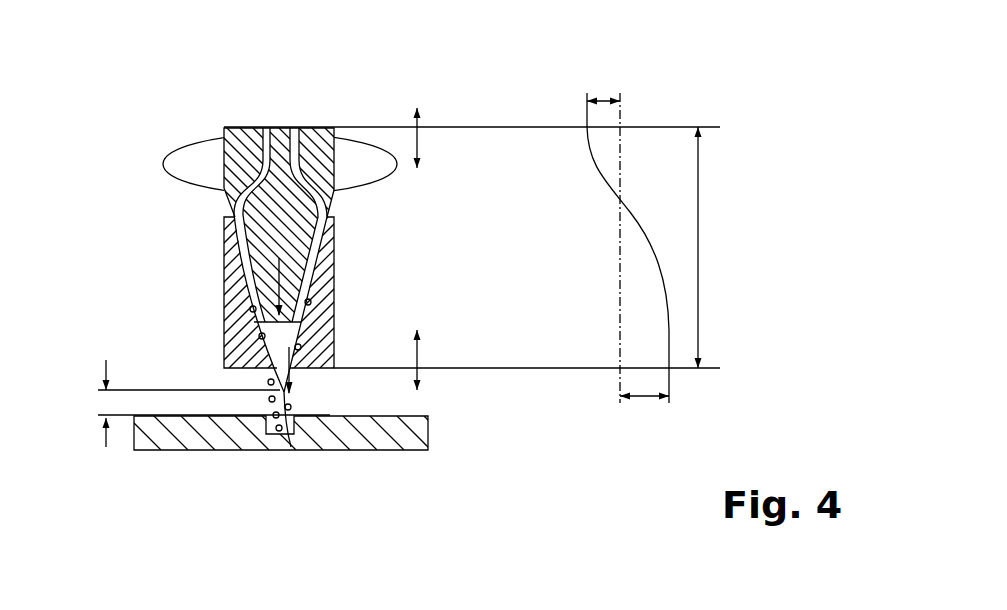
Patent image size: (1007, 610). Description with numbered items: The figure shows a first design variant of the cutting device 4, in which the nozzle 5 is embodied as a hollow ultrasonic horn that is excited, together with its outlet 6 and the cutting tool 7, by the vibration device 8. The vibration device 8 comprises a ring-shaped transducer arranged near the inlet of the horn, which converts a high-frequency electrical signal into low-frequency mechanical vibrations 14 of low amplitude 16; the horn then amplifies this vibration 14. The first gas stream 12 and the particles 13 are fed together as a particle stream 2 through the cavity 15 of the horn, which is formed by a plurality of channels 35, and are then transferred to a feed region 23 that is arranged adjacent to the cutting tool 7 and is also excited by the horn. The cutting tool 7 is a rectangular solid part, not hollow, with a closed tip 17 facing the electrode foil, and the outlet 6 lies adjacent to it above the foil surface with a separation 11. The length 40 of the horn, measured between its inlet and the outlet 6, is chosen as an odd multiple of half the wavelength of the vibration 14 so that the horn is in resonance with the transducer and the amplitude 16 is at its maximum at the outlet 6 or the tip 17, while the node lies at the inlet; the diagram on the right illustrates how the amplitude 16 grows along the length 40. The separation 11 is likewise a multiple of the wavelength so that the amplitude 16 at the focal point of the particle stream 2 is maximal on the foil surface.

The particle stream 2 is at (318, 266).
The cutting device 4 is at (403, 87).
The nozzle 5 is at (230, 200).
The outlet 6 is at (270, 385).
The cutting tool 7 is at (272, 352).
The vibrating device 8 is at (220, 142).
The separation 11 is at (106, 403).
The first gas stream 12 is at (322, 234).
The particles 13 is at (308, 300).
The mechanical vibrations 14 is at (419, 142).
The cavity 15 is at (296, 155).
The amplitude 16 is at (602, 99).
The tip 17 is at (292, 449).
The feed region 23 is at (246, 290).
The inlet channels 35 is at (267, 130).
The length 40 is at (700, 256).